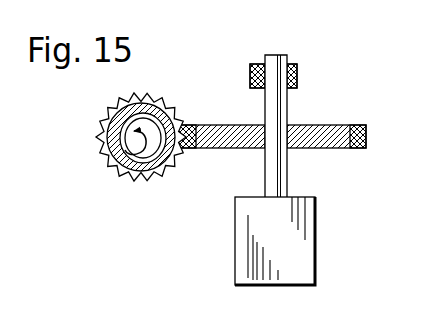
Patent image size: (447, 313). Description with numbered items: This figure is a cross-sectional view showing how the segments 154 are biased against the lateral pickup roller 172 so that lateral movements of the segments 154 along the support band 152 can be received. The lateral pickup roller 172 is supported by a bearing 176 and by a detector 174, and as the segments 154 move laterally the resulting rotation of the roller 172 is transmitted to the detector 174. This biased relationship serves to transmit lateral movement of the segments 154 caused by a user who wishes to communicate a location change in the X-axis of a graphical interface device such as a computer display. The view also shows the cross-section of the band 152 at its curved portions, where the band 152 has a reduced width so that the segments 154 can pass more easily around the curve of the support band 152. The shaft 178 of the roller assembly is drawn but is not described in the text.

The support band 152 is at (115, 157).
The segments 154 is at (133, 190).
The lateral pickup roller 172 is at (339, 152).
The detector 174 is at (247, 270).
The bearing 176 is at (247, 73).
The shaft 178 is at (258, 175).